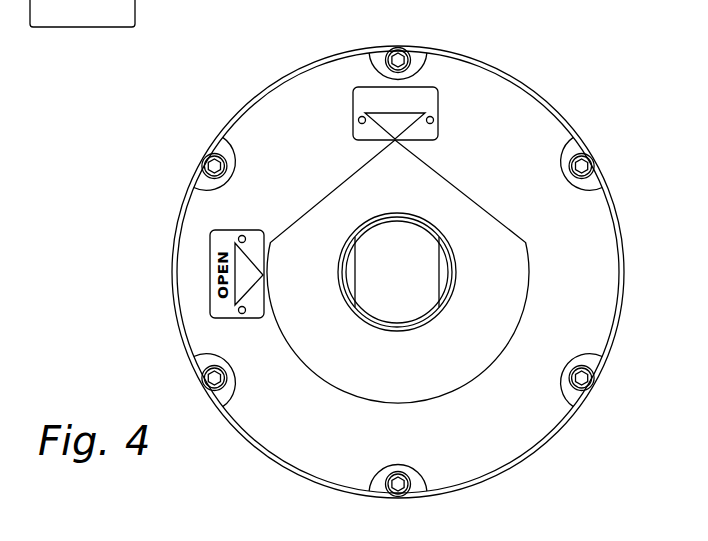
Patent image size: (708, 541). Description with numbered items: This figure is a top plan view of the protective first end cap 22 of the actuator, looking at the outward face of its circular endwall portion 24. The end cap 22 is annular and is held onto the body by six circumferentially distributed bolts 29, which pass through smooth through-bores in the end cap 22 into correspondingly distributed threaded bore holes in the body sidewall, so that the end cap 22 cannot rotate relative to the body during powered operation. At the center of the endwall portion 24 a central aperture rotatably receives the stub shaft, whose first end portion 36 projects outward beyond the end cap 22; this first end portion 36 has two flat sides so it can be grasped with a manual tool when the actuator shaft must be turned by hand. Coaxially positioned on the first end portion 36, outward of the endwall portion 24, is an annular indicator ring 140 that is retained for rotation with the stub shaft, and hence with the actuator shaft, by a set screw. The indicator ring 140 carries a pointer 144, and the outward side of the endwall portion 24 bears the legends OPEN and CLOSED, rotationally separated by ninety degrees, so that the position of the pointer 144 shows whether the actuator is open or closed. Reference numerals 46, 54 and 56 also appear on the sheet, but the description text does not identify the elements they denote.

The first end cap 22 is at (517, 77).
The endwall portion 24 is at (516, 161).
The bolts 29 is at (398, 48).
The first end portion 36 is at (393, 308).
The indicator ring 140 is at (507, 310).
The pointer 144 is at (362, 165).
The element 46 is at (236, 0).
The element 54 is at (160, 0).
The element 56 is at (82, 13).